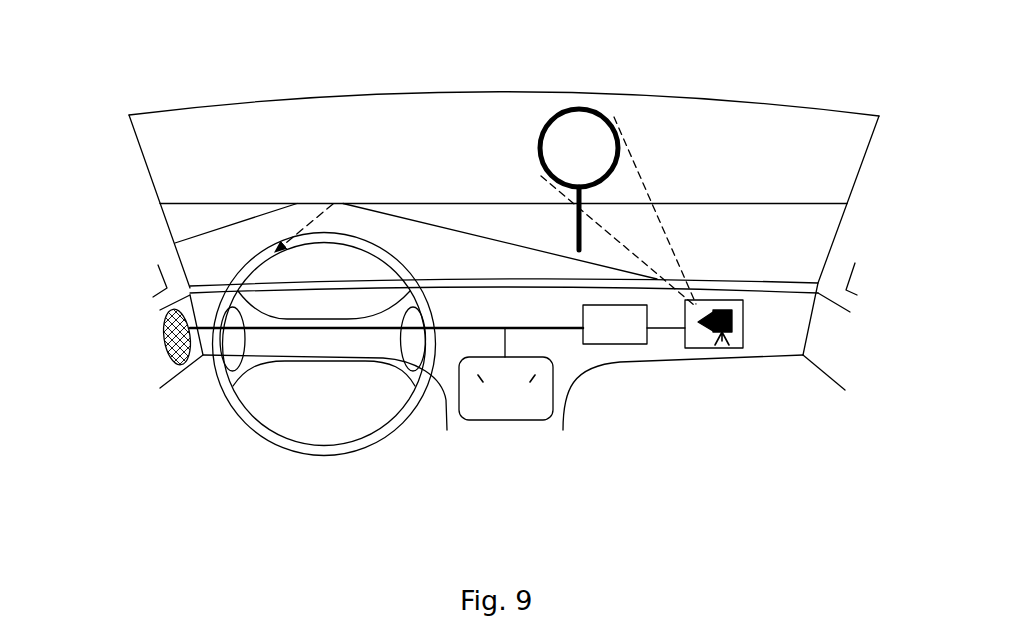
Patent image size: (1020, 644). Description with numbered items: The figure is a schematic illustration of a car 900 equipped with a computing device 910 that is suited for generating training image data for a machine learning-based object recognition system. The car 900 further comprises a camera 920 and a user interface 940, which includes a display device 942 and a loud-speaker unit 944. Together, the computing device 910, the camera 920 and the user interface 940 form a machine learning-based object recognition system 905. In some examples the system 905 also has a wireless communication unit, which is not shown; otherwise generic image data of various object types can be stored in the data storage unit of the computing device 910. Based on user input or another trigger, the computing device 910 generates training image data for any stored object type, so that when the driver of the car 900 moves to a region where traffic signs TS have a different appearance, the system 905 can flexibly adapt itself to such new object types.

The car 900 is at (111, 74).
The machine learning-based object recognition system 905 is at (680, 428).
The computing device 910 is at (615, 344).
The camera 920 is at (718, 348).
The user interface 940 is at (270, 469).
The display device 942 is at (500, 422).
The loud-speaker unit 944 is at (180, 372).
The traffic signs TS is at (608, 109).